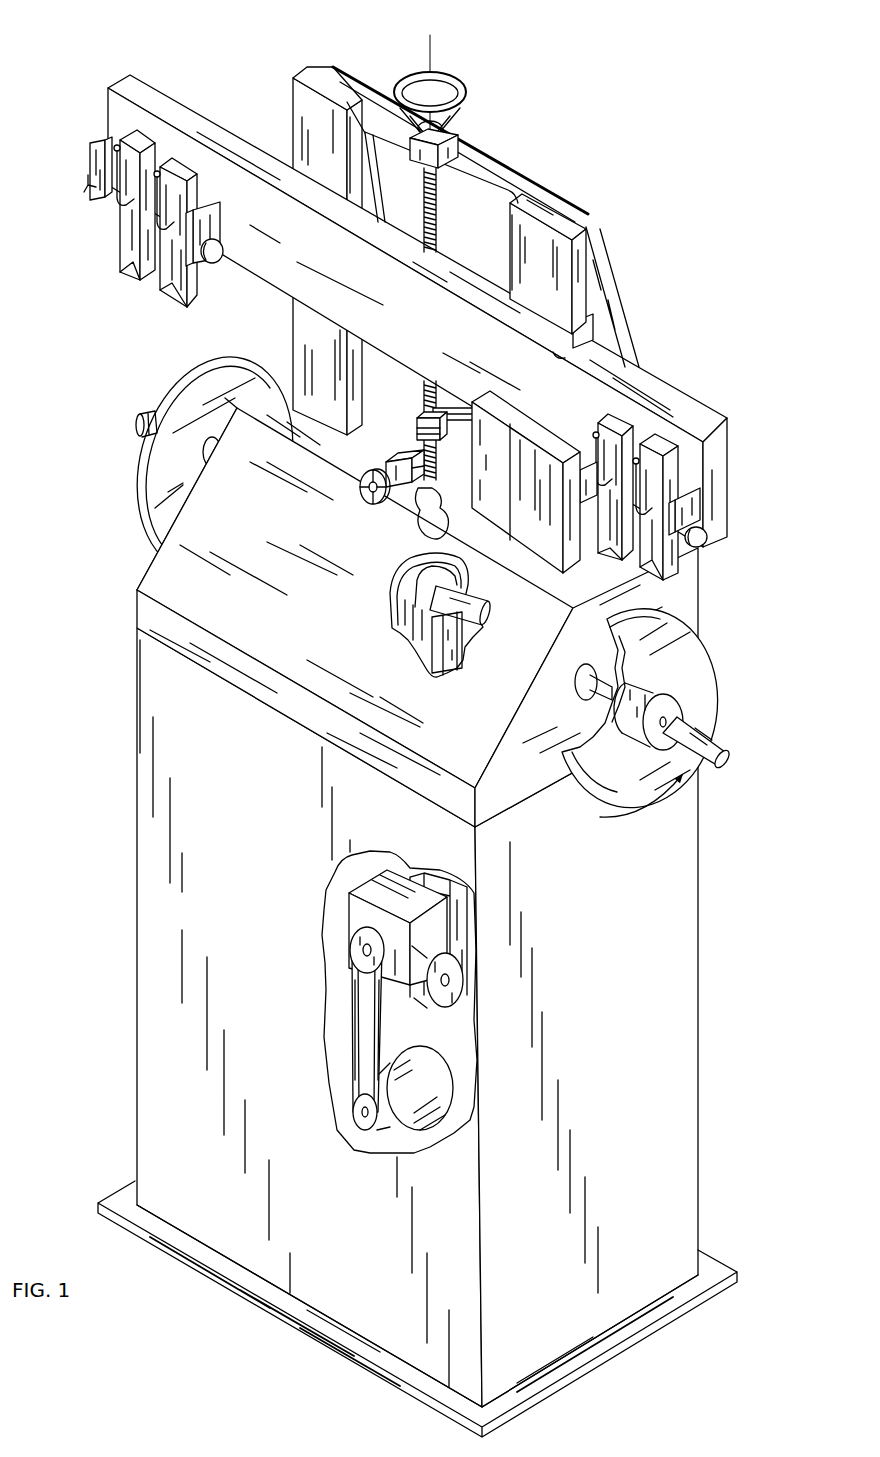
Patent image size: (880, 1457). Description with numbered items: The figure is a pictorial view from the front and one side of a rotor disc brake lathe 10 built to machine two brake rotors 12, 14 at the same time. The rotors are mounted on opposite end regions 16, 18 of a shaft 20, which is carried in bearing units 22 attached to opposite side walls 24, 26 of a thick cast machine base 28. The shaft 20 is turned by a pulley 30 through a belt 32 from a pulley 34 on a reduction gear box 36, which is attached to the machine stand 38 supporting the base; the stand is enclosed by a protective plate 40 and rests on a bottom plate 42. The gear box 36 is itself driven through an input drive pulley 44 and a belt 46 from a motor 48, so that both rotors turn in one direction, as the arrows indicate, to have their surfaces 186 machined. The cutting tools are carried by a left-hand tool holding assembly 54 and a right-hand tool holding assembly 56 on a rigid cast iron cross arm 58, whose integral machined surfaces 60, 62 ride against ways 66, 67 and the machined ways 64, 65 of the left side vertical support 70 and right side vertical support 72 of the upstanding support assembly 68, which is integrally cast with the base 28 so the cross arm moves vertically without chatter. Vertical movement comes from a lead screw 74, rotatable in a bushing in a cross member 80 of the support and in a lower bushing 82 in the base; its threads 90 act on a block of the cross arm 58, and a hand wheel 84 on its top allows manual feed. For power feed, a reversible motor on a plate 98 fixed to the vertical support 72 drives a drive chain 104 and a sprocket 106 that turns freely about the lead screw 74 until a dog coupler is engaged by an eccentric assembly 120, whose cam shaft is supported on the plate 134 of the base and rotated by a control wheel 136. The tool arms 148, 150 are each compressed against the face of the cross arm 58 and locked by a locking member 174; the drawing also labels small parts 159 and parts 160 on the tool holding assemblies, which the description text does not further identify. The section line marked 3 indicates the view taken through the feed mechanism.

The rotor disc brake lathe 10 is at (133, 775).
The brake rotor 12 is at (712, 680).
The brake rotor 14 is at (250, 356).
The end region of shaft 16 is at (725, 762).
The end region of shaft 18 is at (138, 436).
The shaft 20 is at (490, 605).
The bearing unit 22 is at (586, 700).
The side wall 24 is at (497, 781).
The side wall 26 is at (137, 578).
The machine base 28 is at (296, 728).
The pulley 30 is at (464, 642).
The belt 32 is at (400, 635).
The pulley 34 is at (463, 981).
The reduction gear box 36 is at (349, 900).
The machine stand 38 is at (137, 908).
The plate 40 is at (187, 918).
The bottom plate 42 is at (98, 1200).
The input drive pulley 44 is at (352, 953).
The belt 46 is at (352, 1018).
The motor 48 is at (453, 1097).
The left-hand tool holding assembly 54 is at (102, 241).
The right-hand tool holding assembly 56 is at (708, 563).
The cross arm 58 is at (405, 338).
The machined surface 60 is at (292, 194).
The machined surface 62 is at (553, 357).
The machined way 64 is at (294, 75).
The machined way 65 is at (587, 258).
The way 66 is at (510, 250).
The way 67 is at (368, 182).
The upstanding support assembly 68 is at (380, 208).
The left side vertical support 70 is at (292, 113).
The right side vertical support 72 is at (510, 263).
The lead screw 74 is at (424, 412).
The cross member 80 is at (500, 167).
The lower bushing 82 is at (438, 492).
The hand wheel 84 is at (466, 112).
The threads 90 is at (438, 216).
The plate 98 is at (478, 484).
The drive chain 104 is at (466, 408).
The sprocket 106 is at (418, 430).
The eccentric assembly 120 is at (385, 463).
The plate 134 is at (466, 542).
The control wheel 136 is at (379, 505).
The tool arm 148 is at (120, 142).
The tool arm 150 is at (185, 178).
The knob 159 is at (88, 183).
The clamp plate 160 is at (90, 150).
The locking member 174 is at (594, 437).
The surfaces 186 is at (137, 520).
The section line 3 is at (430, 70).